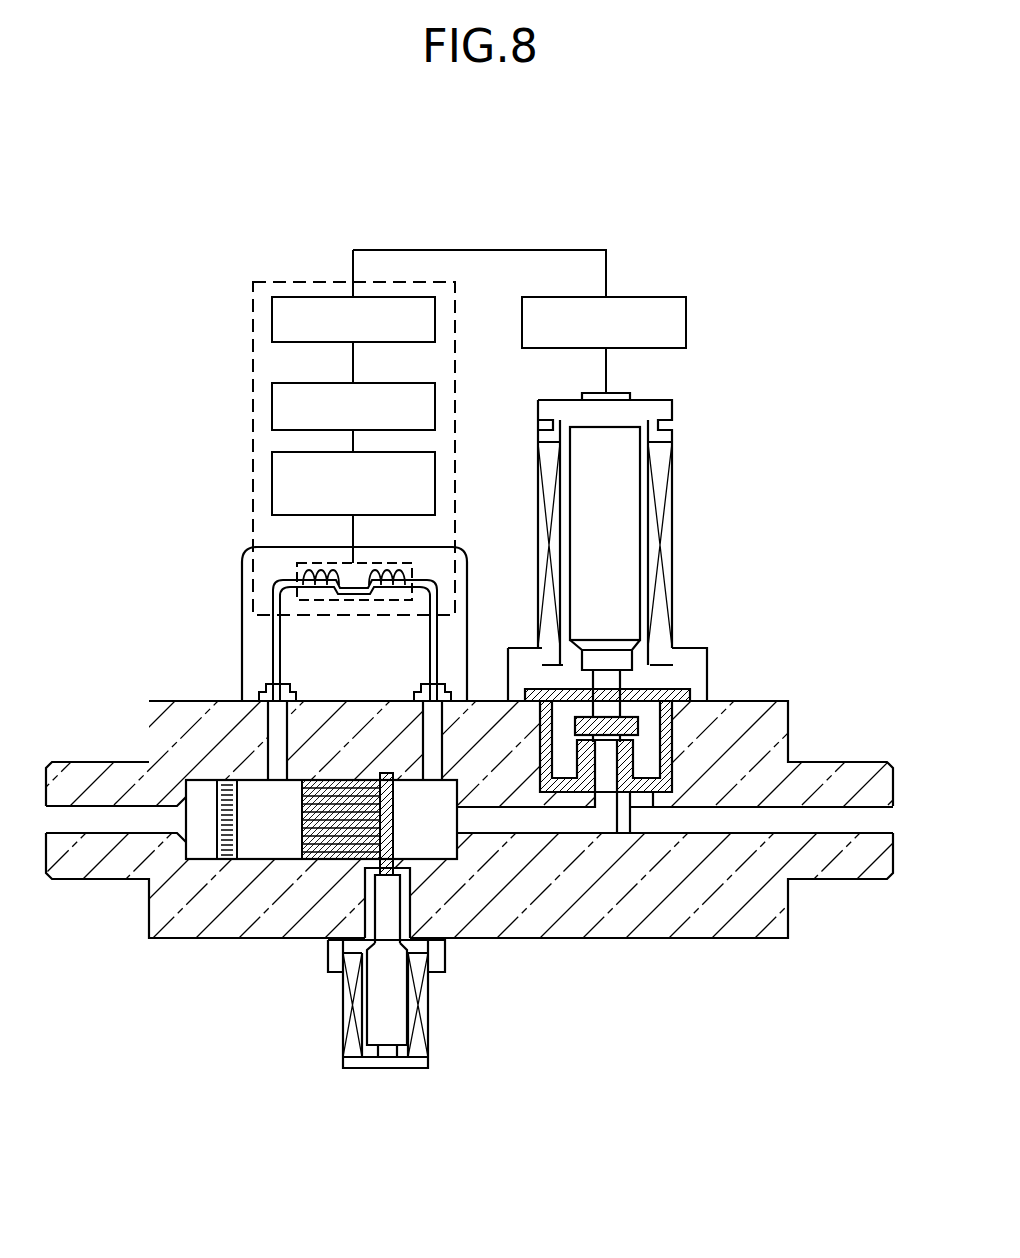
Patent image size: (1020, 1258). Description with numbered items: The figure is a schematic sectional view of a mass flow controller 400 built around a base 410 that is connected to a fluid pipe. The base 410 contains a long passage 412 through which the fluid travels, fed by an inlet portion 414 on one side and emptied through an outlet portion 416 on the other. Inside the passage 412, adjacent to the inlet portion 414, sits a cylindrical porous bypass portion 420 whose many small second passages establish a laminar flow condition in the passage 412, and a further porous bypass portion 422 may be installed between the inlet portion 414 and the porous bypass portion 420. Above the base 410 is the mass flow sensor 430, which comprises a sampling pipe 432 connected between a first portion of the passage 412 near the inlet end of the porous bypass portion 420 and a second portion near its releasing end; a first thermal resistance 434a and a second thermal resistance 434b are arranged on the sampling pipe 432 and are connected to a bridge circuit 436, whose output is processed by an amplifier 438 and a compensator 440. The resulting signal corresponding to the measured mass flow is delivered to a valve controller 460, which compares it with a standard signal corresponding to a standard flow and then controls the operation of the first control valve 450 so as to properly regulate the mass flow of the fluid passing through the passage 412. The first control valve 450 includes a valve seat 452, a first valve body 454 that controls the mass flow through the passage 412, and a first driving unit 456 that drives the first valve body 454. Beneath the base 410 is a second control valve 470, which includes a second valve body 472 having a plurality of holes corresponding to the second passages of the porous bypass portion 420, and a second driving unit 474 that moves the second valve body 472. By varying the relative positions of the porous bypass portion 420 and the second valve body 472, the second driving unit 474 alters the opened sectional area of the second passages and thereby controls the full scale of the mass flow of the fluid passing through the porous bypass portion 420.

The mass flow controller 400 is at (790, 413).
The base 410 is at (785, 713).
The passage 412 is at (560, 822).
The inlet portion 414 is at (112, 872).
The outlet portion 416 is at (828, 873).
The porous bypass portion 420 is at (322, 862).
The porous bypass portion 422 is at (228, 862).
The mass flow sensor 430 is at (240, 433).
The sampling pipe 432 is at (277, 636).
The first thermal resistance 434a is at (297, 570).
The second thermal resistance 434b is at (387, 577).
The bridge circuit 436 is at (272, 488).
The amplifier 438 is at (272, 398).
The compensator 440 is at (272, 317).
The first control valve 450 is at (690, 526).
The valve seat 452 is at (672, 765).
The first valve body 454 is at (632, 726).
The first driving unit 456 is at (663, 555).
The valve controller 460 is at (686, 322).
The second control valve 470 is at (325, 1019).
The second valve body 472 is at (393, 846).
The second driving unit 474 is at (428, 1033).